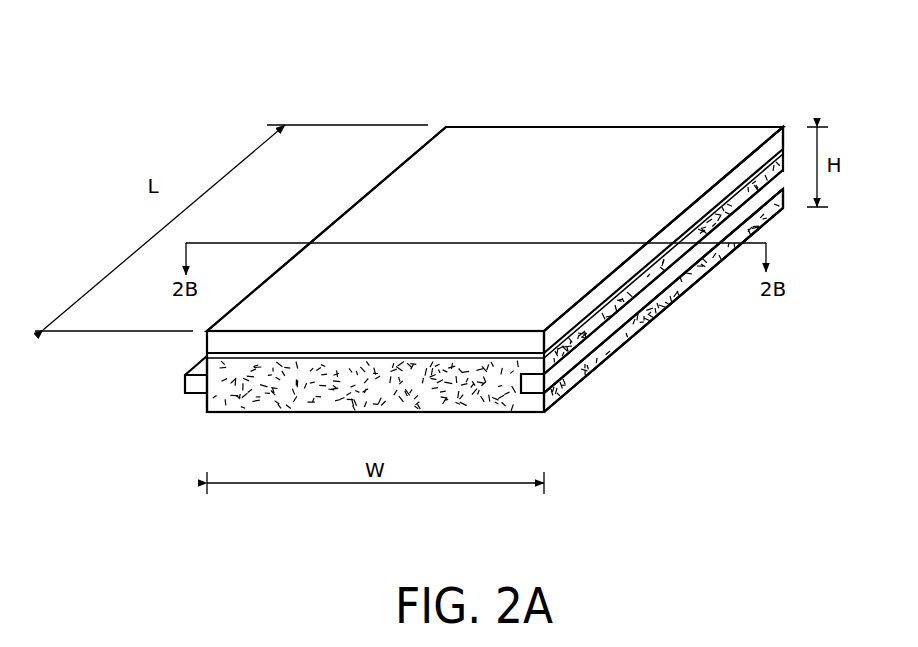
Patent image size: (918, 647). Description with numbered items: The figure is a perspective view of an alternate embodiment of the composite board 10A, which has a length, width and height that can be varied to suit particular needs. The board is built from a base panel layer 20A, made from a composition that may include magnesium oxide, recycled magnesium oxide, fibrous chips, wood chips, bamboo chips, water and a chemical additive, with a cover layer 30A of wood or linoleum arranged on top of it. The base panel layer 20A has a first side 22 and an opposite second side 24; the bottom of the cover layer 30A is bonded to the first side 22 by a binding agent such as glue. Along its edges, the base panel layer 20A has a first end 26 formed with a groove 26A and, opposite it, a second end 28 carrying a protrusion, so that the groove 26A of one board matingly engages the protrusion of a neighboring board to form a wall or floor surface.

The composite board 10A is at (680, 409).
The base panel layer 20A is at (288, 390).
The first side 22 is at (797, 140).
The second side 24 is at (772, 220).
The first end 26 is at (647, 317).
The groove 26A is at (530, 393).
The second end 28 is at (203, 400).
The cover layer 30A is at (528, 138).